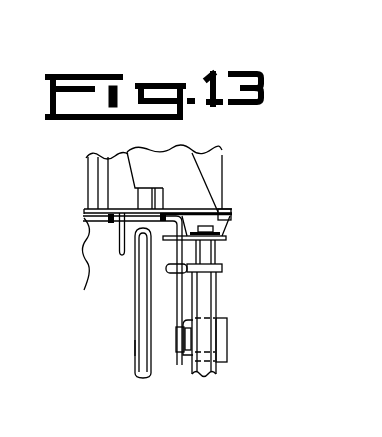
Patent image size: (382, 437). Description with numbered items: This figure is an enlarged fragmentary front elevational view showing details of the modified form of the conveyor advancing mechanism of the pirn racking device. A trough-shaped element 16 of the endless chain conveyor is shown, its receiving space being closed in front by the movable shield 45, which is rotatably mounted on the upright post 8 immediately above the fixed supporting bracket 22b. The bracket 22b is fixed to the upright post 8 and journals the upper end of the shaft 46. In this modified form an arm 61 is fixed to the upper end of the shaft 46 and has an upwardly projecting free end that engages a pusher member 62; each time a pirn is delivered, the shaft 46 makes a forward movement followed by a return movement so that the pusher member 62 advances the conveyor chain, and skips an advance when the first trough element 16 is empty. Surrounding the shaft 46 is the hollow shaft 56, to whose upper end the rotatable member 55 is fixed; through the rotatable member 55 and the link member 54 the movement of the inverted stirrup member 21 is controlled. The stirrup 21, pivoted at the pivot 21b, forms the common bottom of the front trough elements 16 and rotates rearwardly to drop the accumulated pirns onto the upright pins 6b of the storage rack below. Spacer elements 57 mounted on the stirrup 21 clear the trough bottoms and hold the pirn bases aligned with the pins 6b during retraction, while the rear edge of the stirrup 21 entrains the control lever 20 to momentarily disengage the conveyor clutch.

The trough-shaped element 16 is at (87, 175).
The inverted stirrup member 21 is at (84, 218).
The spacer elements 57 is at (110, 226).
The control lever 20 is at (120, 247).
The link member 54 is at (180, 268).
The upright pins 6b is at (135, 348).
The pivot 21b is at (174, 338).
The movable shield 45 is at (186, 159).
The upright post 8 is at (222, 172).
The pusher member 62 is at (158, 218).
The upper bracket 22b is at (228, 218).
The arm 61 is at (226, 238).
The shaft 46 is at (215, 252).
The rotatable member 55 is at (222, 269).
The hollow shaft 56 is at (212, 298).